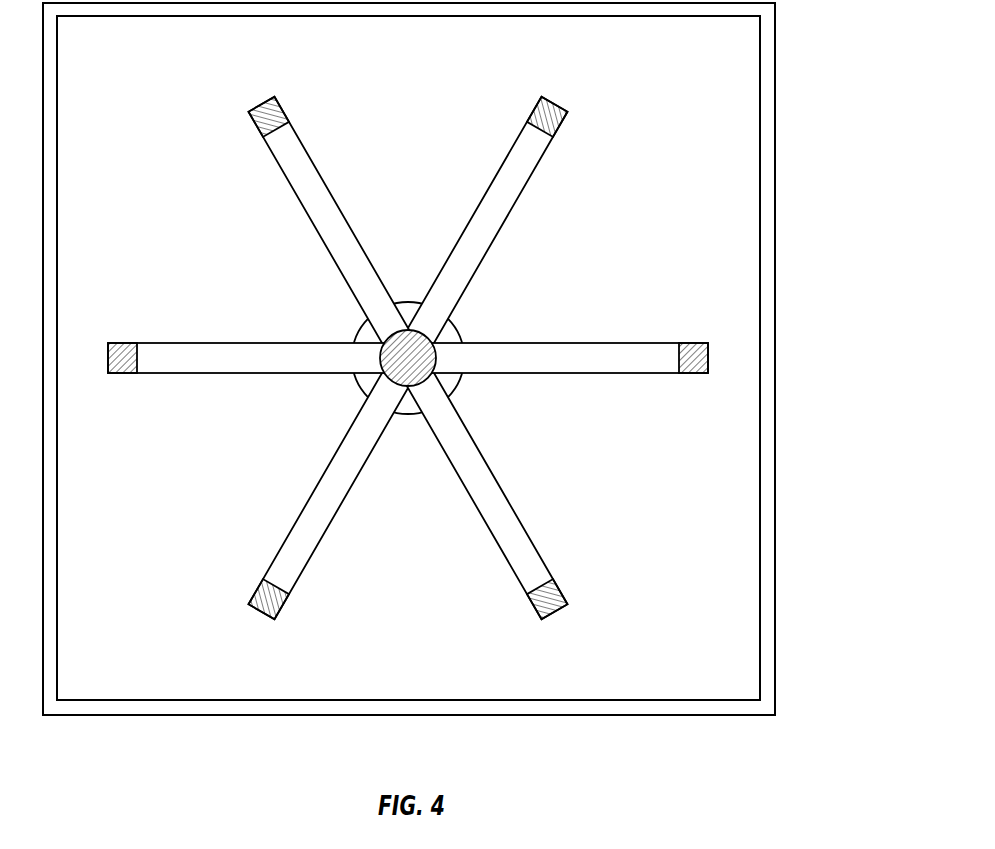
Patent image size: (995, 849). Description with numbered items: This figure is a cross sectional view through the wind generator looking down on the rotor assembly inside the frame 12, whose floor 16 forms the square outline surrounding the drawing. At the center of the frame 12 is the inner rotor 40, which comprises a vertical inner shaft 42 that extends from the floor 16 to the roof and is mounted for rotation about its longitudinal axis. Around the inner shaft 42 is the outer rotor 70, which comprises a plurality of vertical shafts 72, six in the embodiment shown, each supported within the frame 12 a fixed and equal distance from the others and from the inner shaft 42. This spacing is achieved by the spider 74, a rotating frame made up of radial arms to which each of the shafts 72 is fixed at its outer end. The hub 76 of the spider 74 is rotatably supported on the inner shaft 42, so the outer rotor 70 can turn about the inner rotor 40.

The frame 12 is at (782, 579).
The floor 16 is at (742, 665).
The inner rotor 40 is at (445, 358).
The inner shaft 42 is at (383, 352).
The outer rotor 70 is at (533, 194).
The vertical shafts 72 is at (282, 112).
The spider 74 is at (247, 374).
The hub 76 is at (458, 387).